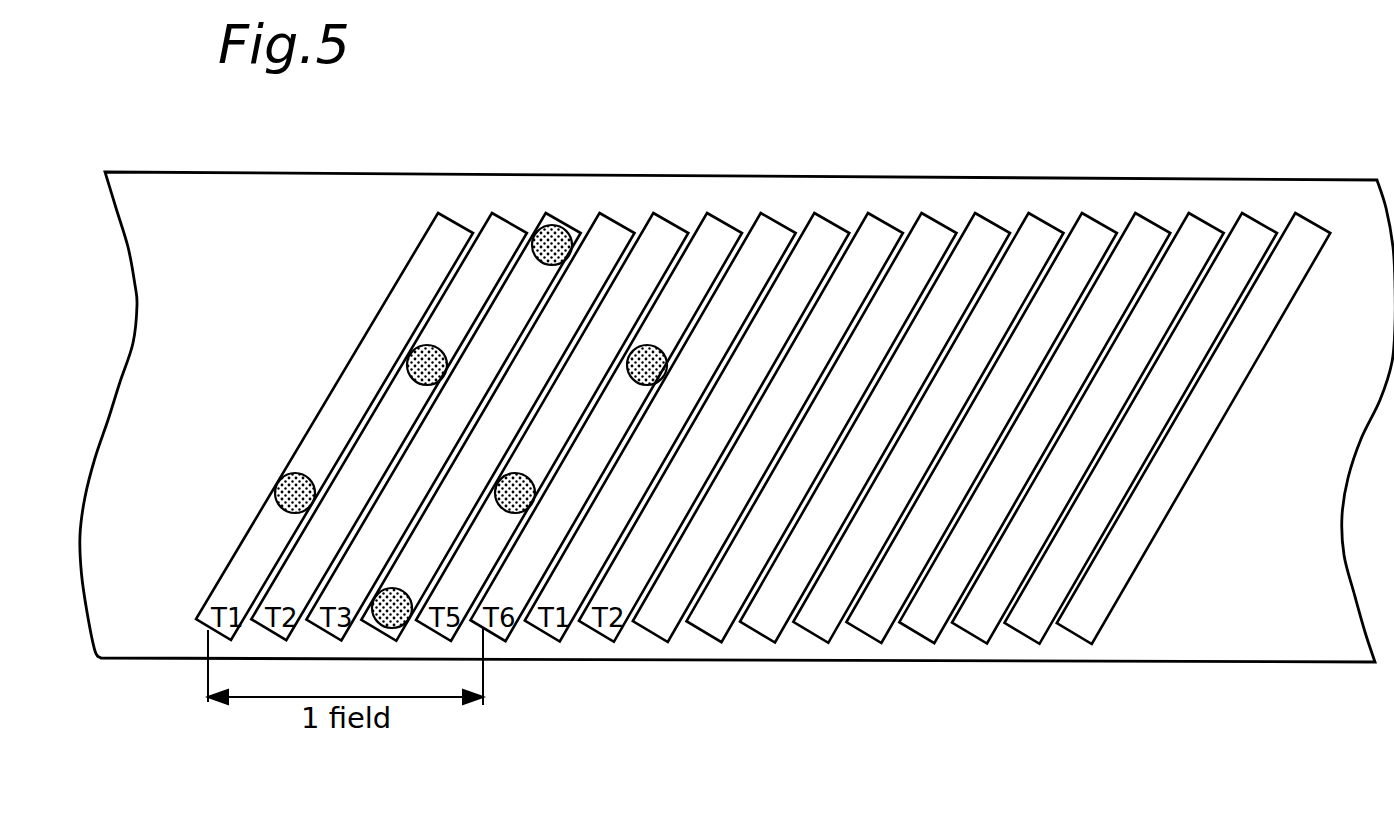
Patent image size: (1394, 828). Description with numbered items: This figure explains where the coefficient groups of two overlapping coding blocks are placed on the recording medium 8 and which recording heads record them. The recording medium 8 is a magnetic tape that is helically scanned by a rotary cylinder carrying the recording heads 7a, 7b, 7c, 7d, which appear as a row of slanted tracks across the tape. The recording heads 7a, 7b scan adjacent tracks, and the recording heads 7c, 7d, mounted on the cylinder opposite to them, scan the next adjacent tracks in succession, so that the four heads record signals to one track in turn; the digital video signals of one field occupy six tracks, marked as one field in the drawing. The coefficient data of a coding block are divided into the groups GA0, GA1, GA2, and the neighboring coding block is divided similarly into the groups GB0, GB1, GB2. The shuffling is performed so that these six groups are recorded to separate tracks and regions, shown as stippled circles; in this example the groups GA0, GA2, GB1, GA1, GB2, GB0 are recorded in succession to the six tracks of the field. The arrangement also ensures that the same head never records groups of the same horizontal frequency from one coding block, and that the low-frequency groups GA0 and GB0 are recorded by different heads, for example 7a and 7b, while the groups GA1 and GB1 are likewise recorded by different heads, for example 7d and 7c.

The recording head 7a is at (550, 390).
The recording head 7b is at (605, 390).
The recording head 7c is at (551, 390).
The recording head 7d is at (606, 390).
The recording medium 8 is at (1163, 661).
The coefficient group GA0 is at (292, 488).
The coefficient group GA1 is at (385, 600).
The coefficient group GA2 is at (425, 365).
The coefficient group GB0 is at (645, 360).
The coefficient group GB1 is at (548, 243).
The coefficient group GB2 is at (522, 480).